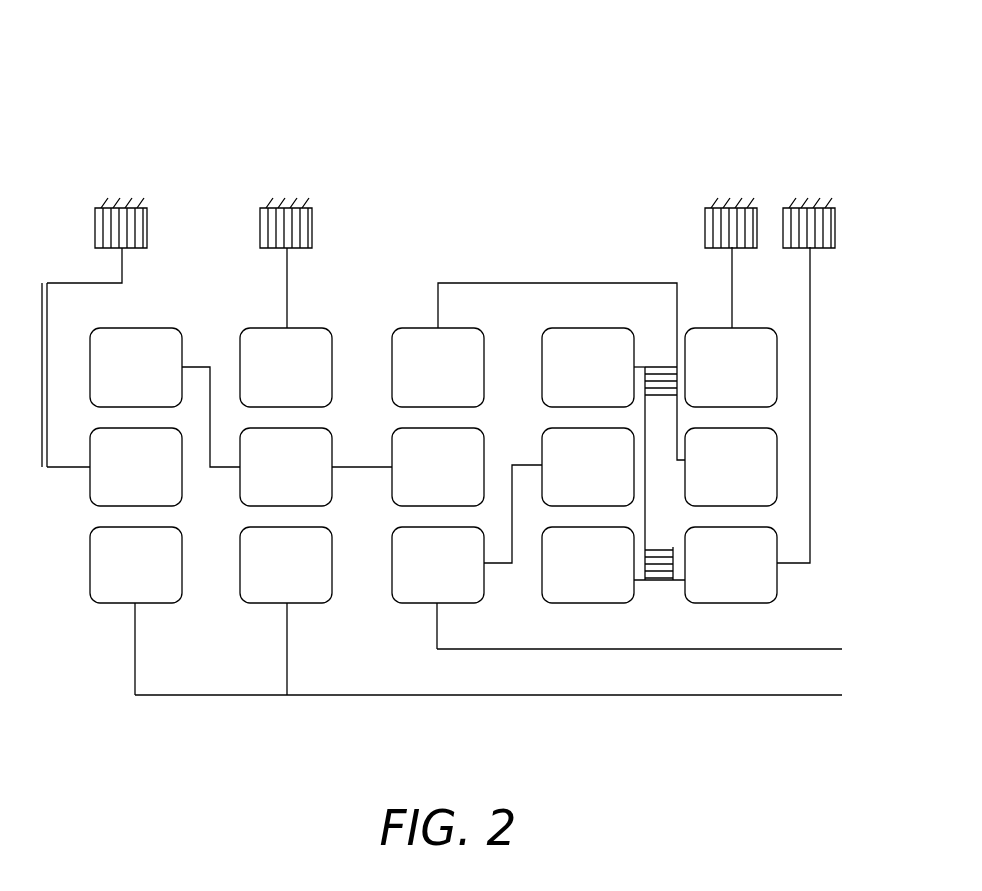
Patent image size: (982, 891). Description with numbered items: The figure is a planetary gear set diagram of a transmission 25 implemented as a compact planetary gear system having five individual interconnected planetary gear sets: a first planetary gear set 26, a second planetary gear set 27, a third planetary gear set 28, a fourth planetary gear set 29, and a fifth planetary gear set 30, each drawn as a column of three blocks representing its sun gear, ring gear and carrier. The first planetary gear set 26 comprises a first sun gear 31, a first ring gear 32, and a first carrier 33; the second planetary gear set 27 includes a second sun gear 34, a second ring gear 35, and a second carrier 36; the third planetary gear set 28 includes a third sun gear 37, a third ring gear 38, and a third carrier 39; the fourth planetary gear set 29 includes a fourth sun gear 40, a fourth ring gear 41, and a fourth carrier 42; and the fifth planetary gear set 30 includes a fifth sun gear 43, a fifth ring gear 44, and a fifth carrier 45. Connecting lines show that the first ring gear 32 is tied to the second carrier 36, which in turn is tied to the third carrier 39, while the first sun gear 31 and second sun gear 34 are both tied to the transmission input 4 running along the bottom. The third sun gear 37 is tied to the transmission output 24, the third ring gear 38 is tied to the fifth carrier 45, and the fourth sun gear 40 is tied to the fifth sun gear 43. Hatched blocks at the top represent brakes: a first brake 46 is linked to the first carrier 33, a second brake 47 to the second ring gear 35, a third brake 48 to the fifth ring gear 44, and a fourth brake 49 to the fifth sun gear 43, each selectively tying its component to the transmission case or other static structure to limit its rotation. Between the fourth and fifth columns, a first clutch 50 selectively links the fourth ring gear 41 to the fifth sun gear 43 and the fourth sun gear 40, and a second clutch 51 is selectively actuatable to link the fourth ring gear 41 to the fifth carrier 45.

The transmission input 4 is at (805, 697).
The transmission output 24 is at (841, 651).
The transmission 25 is at (360, 64).
The first planetary gear set 26 is at (119, 626).
The second planetary gear set 27 is at (269, 626).
The third planetary gear set 28 is at (420, 626).
The fourth planetary gear set 29 is at (577, 626).
The fifth planetary gear set 30 is at (725, 626).
The first sun gear 31 is at (123, 580).
The first ring gear 32 is at (123, 382).
The first carrier 33 is at (123, 482).
The second sun gear 34 is at (273, 580).
The second ring gear 35 is at (273, 382).
The second carrier 36 is at (273, 482).
The third sun gear 37 is at (425, 580).
The third ring gear 38 is at (425, 382).
The third carrier 39 is at (425, 482).
The fourth sun gear 40 is at (575, 580).
The fourth ring gear 41 is at (575, 382).
The fourth carrier 42 is at (575, 482).
The fifth sun gear 43 is at (718, 580).
The fifth ring gear 44 is at (718, 382).
The fifth carrier 45 is at (718, 482).
The first brake 46 is at (103, 207).
The second brake 47 is at (267, 207).
The third brake 48 is at (712, 207).
The fourth brake 49 is at (788, 207).
The first clutch 50 is at (651, 545).
The second clutch 51 is at (651, 362).